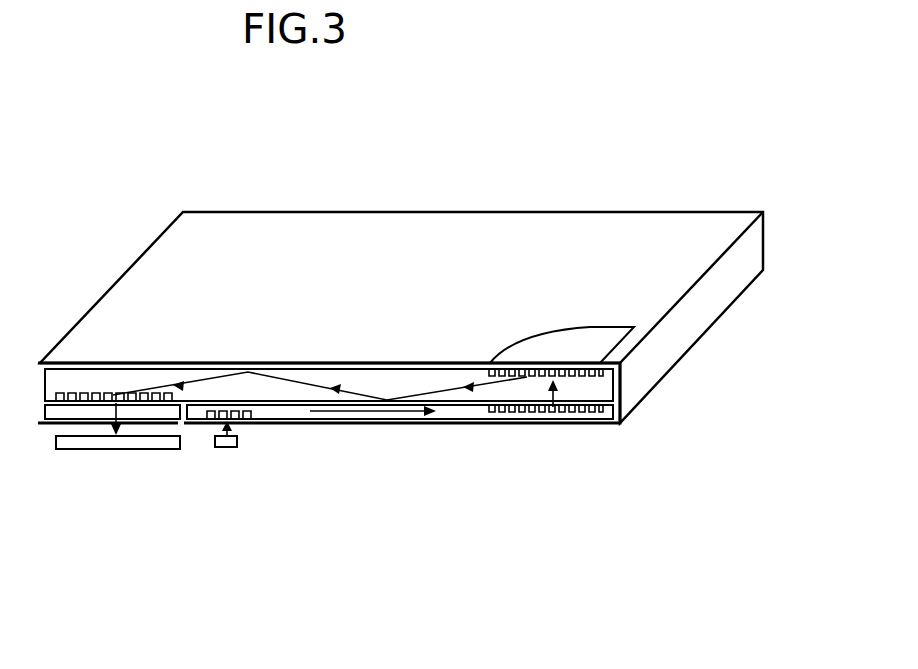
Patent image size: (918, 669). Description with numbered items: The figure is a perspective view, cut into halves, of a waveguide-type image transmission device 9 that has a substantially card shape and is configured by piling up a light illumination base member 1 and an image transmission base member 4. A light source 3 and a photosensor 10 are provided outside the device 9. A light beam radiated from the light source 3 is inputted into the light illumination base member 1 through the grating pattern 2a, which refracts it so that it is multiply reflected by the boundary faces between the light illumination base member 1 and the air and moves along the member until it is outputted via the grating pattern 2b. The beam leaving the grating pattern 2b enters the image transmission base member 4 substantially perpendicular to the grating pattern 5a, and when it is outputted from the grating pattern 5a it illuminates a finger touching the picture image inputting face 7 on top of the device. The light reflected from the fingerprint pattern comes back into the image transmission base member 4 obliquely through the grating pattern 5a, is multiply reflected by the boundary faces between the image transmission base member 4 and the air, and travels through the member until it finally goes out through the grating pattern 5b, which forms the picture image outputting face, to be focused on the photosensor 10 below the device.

The light illumination base member 1 is at (467, 410).
The grating pattern 2a is at (237, 423).
The grating pattern 2b is at (577, 415).
The light source 3 is at (225, 447).
The image transmission base member 4 is at (275, 388).
The grating pattern 5a is at (581, 377).
The grating pattern 5b is at (93, 395).
The picture image inputting face 7 is at (568, 347).
The waveguide-type image transmission device 9 is at (276, 247).
The photosensor 10 is at (92, 443).